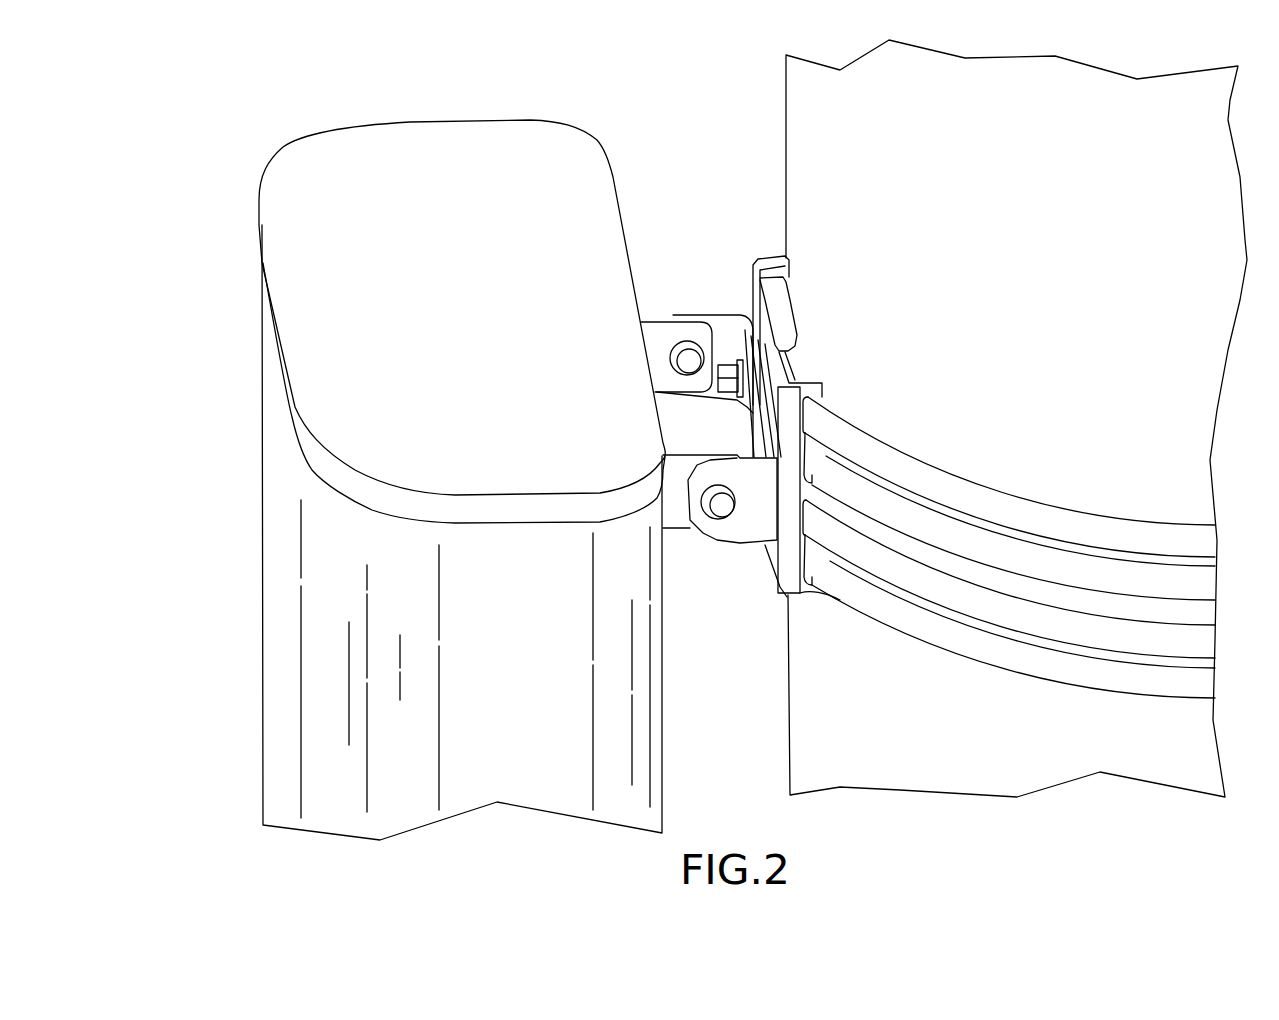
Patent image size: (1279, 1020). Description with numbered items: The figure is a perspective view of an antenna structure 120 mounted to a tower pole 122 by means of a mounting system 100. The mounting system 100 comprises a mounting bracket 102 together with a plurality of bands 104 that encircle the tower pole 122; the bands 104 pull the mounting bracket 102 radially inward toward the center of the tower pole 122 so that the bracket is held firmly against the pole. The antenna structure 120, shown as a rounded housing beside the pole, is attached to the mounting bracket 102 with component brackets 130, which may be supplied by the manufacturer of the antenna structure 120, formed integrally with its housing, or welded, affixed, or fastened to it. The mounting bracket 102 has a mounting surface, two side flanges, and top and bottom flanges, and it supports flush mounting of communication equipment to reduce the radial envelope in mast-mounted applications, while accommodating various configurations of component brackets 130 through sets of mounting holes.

The mounting system 100 is at (556, 822).
The mounting bracket 102 is at (784, 598).
The bands 104 is at (1165, 680).
The antenna structure 120 is at (292, 516).
The tower pole 122 is at (786, 93).
The component brackets 130 is at (693, 320).